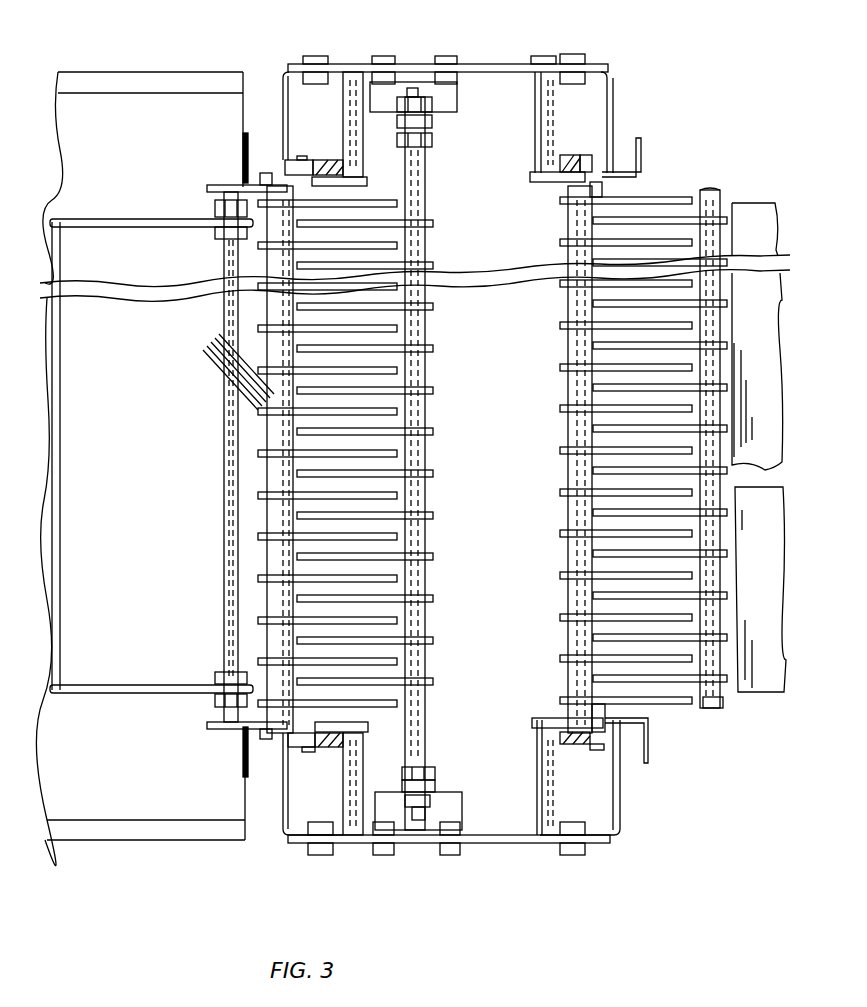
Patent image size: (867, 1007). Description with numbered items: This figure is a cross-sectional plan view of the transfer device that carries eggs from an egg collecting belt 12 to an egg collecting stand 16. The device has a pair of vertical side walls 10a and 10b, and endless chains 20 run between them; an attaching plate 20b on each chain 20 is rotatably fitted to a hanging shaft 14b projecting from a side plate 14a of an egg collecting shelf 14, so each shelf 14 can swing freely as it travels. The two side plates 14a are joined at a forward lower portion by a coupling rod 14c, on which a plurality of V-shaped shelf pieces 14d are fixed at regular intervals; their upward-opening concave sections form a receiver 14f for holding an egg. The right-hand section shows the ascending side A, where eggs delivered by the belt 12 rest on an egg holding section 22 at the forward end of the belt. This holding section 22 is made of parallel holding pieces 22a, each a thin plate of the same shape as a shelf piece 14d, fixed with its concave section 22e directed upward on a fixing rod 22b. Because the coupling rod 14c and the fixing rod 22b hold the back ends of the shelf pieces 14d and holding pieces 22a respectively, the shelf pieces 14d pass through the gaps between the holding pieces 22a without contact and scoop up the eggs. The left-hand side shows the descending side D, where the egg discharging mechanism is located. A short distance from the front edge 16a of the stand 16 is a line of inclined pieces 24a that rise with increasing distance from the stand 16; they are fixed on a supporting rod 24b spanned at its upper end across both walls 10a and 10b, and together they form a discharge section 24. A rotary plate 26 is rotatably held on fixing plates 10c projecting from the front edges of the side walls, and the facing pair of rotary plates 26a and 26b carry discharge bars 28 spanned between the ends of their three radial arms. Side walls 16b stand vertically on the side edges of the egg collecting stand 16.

The side wall 10a is at (486, 64).
The side wall 10b is at (490, 845).
The fixing plate 10c is at (207, 187).
The egg collecting belt 12 is at (752, 442).
The egg collecting shelf 14 is at (454, 471).
The side plate 14a is at (387, 203).
The hanging shaft 14b is at (600, 190).
The coupling rod 14c is at (280, 517).
The shelf piece 14d is at (390, 373).
The receiver 14f is at (313, 328).
The egg collecting stand 16 is at (140, 472).
The front edge 16a is at (243, 735).
The side wall 16b is at (160, 88).
The chain 20 is at (330, 163).
The attaching plate 20b is at (298, 773).
The egg holding section 22 is at (695, 632).
The holding piece 22a is at (578, 432).
The fixing rod 22b is at (690, 673).
The concave section 22e is at (623, 683).
The discharge section 24 is at (398, 632).
The inclined piece 24a is at (425, 533).
The supporting rod 24b is at (398, 662).
The rotary plate 26 is at (151, 449).
The rotary plate 26a is at (130, 643).
The rotary plate 26b is at (140, 220).
The discharge bar 28 is at (60, 433).
The ascending side A is at (596, 140).
The descending side D is at (297, 148).